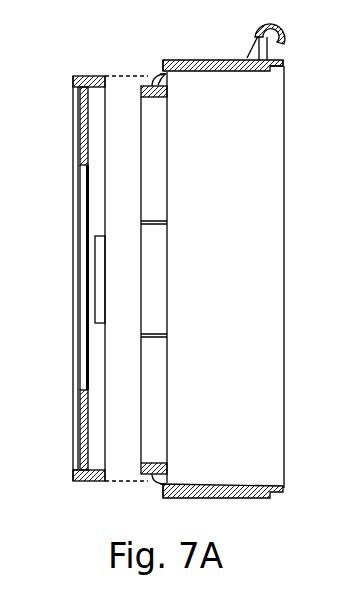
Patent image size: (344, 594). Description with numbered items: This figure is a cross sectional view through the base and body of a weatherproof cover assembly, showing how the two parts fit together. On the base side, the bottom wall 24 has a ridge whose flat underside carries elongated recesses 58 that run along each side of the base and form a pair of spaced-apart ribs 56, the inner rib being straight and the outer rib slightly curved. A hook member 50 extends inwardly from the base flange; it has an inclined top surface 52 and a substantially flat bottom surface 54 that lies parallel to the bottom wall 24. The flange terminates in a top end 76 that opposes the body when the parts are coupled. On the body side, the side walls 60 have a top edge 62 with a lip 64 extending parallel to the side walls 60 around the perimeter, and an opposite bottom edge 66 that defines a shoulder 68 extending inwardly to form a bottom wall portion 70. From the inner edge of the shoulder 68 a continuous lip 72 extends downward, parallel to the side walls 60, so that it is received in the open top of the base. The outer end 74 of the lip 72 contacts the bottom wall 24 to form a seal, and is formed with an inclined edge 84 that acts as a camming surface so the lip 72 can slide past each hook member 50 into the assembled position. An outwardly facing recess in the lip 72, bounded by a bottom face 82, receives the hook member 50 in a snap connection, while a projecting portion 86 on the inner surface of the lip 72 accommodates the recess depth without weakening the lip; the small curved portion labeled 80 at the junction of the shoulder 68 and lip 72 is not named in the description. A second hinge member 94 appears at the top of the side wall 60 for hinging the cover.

The bottom wall 24 is at (87, 403).
The hook member 50 is at (73, 112).
The inclined top surface 52 is at (96, 88).
The bottom surface 54 is at (90, 76).
The ribs 56 is at (73, 470).
The recesses 58 is at (72, 83).
The side walls 60 is at (285, 288).
The top edge 62 is at (283, 61).
The lip 64 is at (285, 67).
The bottom edge 66 is at (167, 65).
The shoulder 68 is at (162, 78).
The bottom wall portion 70 is at (168, 83).
The lip 72 is at (163, 97).
The outer end 74 is at (142, 100).
The top end 76 is at (152, 478).
The curved flange 80 is at (155, 83).
The bottom face 82 is at (147, 87).
The inclined edge 84 is at (148, 78).
The projecting portion 86 is at (162, 266).
The second hinge member 94 is at (289, 26).